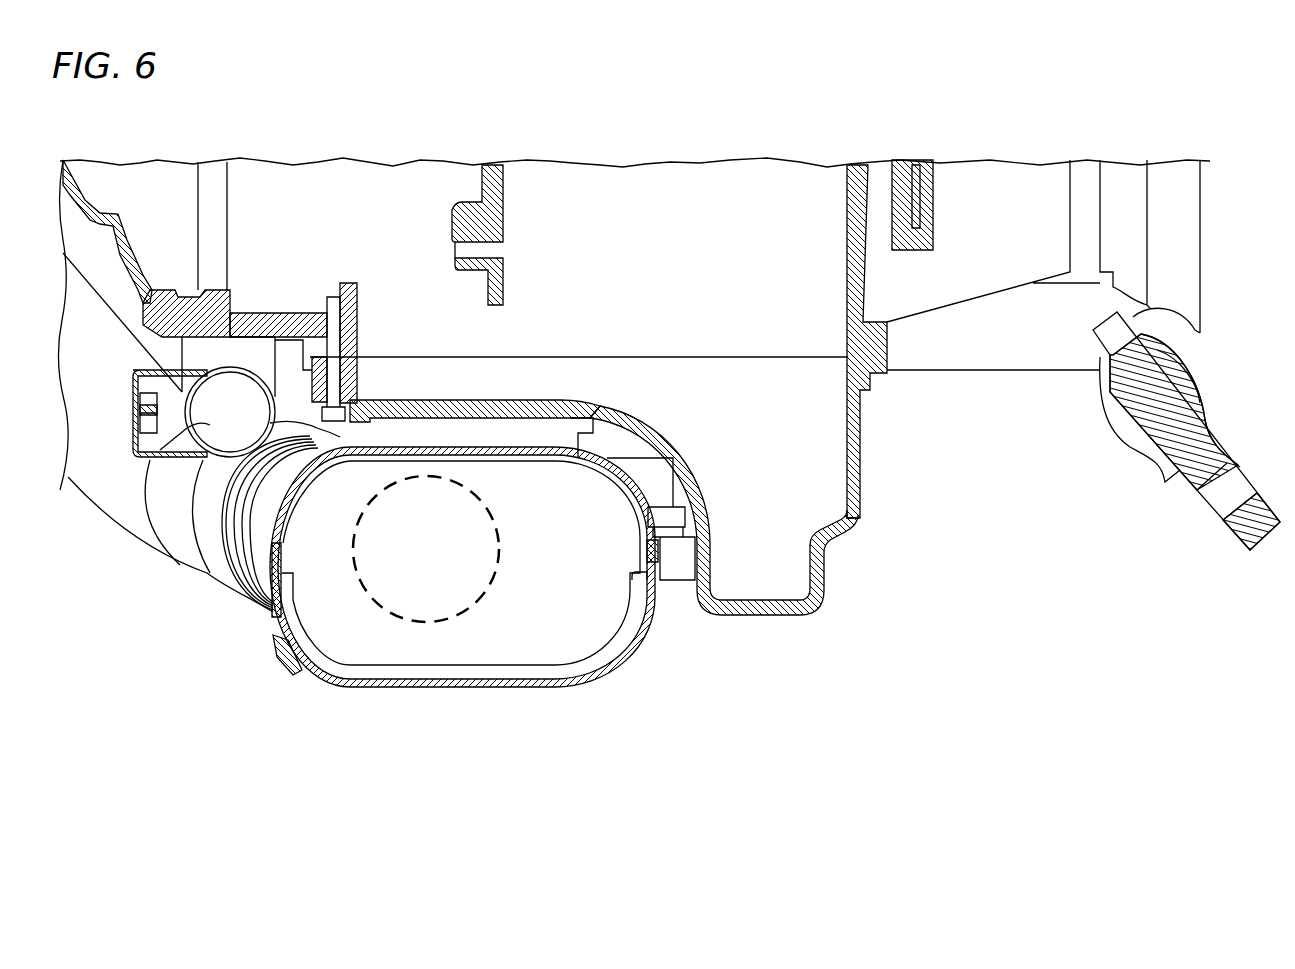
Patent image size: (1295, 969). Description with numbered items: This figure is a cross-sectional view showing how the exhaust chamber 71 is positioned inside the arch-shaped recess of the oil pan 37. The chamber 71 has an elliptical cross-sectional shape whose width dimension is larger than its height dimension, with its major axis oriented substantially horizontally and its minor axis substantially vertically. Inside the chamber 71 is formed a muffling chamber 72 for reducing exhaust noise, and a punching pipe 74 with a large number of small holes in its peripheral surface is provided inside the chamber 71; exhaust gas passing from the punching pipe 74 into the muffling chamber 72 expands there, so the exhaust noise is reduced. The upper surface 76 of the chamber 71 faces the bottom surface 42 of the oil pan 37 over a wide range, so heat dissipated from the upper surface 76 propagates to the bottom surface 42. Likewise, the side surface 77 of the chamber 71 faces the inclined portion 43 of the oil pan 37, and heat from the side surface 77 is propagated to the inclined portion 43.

The oil pan 37 is at (866, 425).
The bottom surface 42 is at (505, 400).
The inclined portion 43 is at (710, 505).
The chamber 71 is at (315, 680).
The muffling chamber 72 is at (565, 602).
The punching pipe 74 is at (428, 622).
The upper surface 76 is at (415, 447).
The side surface 77 is at (648, 540).